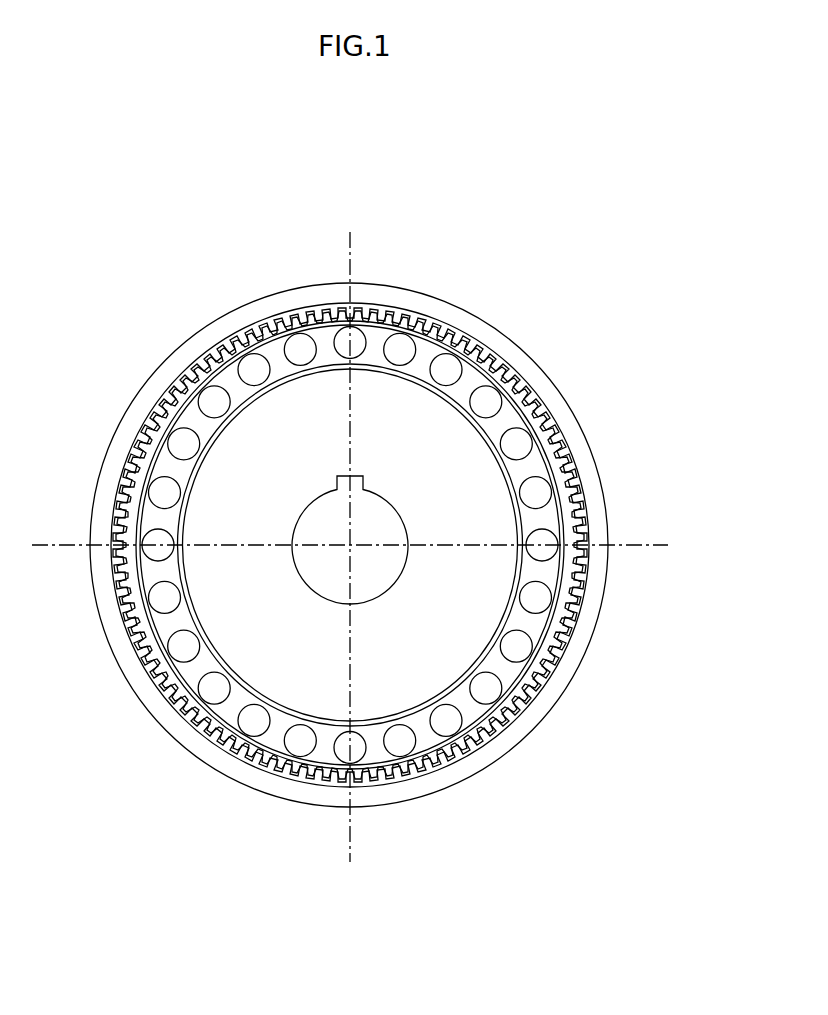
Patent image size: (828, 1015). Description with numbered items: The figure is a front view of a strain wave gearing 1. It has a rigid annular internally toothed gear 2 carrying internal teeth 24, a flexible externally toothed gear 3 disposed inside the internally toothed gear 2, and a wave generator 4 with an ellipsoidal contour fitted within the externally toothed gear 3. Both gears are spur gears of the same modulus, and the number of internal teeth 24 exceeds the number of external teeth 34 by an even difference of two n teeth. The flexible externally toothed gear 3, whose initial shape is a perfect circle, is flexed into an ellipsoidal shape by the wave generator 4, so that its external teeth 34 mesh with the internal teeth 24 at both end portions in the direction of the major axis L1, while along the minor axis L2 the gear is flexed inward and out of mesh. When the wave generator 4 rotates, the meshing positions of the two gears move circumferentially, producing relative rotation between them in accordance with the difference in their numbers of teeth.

The strain wave gearing 1 is at (546, 292).
The rigid annular internally toothed gear 2 is at (570, 428).
The flexible externally toothed gear 3 is at (560, 488).
The wave generator 4 is at (503, 565).
The internal teeth 24 is at (532, 402).
The external teeth 34 is at (547, 420).
The major axis L1 is at (350, 432).
The minor axis L2 is at (235, 546).